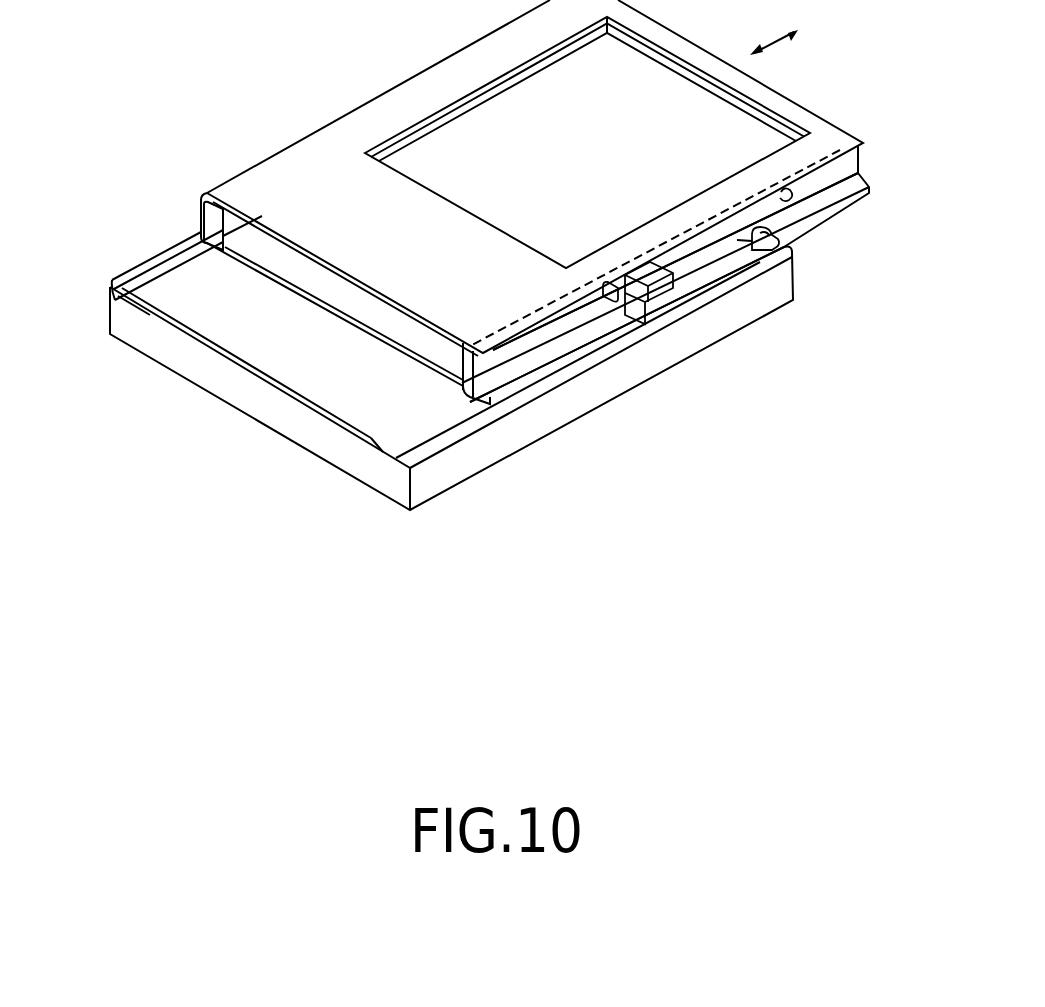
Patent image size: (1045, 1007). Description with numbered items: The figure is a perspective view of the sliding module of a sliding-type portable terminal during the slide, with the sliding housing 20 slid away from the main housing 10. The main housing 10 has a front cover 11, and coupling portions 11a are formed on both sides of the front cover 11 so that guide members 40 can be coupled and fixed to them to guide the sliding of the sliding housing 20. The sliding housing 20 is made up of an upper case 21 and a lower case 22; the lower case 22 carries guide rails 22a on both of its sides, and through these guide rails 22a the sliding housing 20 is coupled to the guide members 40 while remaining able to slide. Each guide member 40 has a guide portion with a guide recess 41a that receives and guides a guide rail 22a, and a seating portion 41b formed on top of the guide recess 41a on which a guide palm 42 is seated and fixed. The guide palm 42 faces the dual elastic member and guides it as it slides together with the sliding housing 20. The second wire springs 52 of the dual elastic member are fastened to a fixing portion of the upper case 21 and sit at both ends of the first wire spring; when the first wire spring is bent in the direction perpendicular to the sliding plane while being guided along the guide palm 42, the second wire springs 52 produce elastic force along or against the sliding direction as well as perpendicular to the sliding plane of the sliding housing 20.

The main housing 10 is at (530, 366).
The front cover 11 is at (165, 366).
The coupling portion 11a is at (410, 450).
The sliding housing 20 is at (454, 254).
The upper case 21 is at (265, 182).
The lower case 22 is at (272, 252).
The guide rail 22a is at (510, 382).
The guide member 40 is at (710, 314).
The guide recess 41a is at (737, 275).
The seating portion 41b is at (786, 251).
The guide palm 42 is at (670, 297).
The second wire spring 52 is at (607, 288).